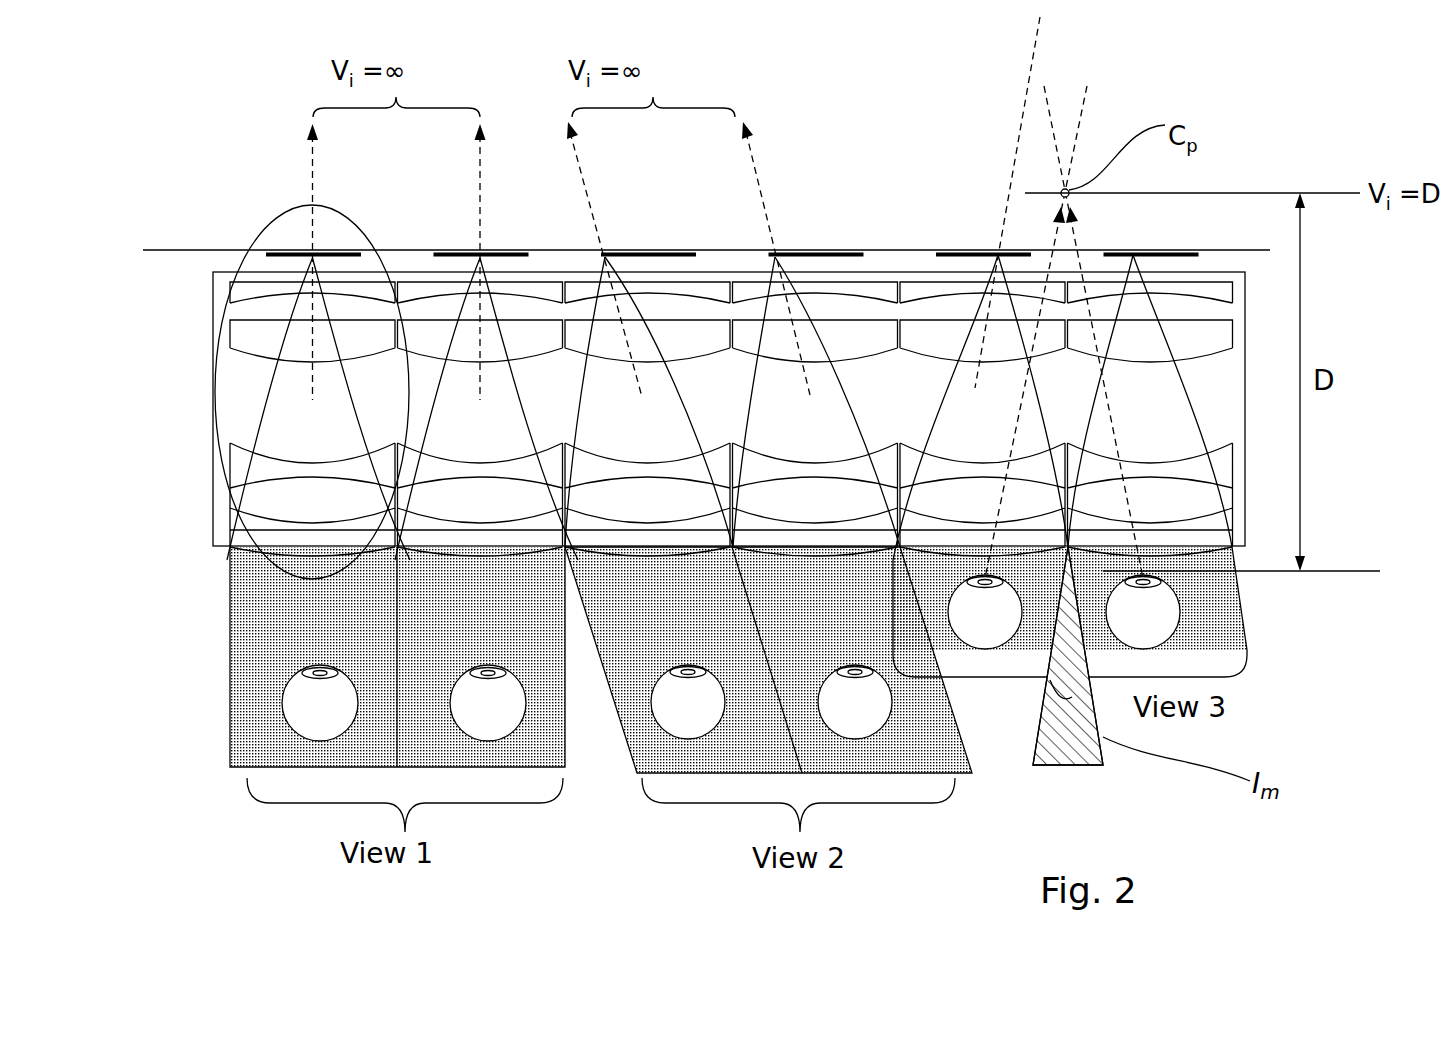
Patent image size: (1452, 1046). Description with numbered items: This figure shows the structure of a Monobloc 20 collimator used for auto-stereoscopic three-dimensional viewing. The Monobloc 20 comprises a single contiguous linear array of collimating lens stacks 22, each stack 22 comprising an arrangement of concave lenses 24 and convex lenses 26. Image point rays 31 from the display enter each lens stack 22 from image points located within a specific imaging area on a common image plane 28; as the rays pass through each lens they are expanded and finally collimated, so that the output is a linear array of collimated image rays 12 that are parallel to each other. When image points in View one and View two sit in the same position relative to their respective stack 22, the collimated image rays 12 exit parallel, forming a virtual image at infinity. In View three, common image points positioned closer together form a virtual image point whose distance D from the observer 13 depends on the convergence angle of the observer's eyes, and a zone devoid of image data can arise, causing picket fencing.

The collimated image rays 12 is at (230, 668).
The observer 13 is at (500, 808).
The Monobloc 20 is at (664, 409).
The collimating lens stack 22 is at (277, 222).
The concave lens 24 is at (237, 293).
The convex lens 26 is at (243, 333).
The common image plane 28 is at (157, 250).
The image point rays 31 is at (475, 258).